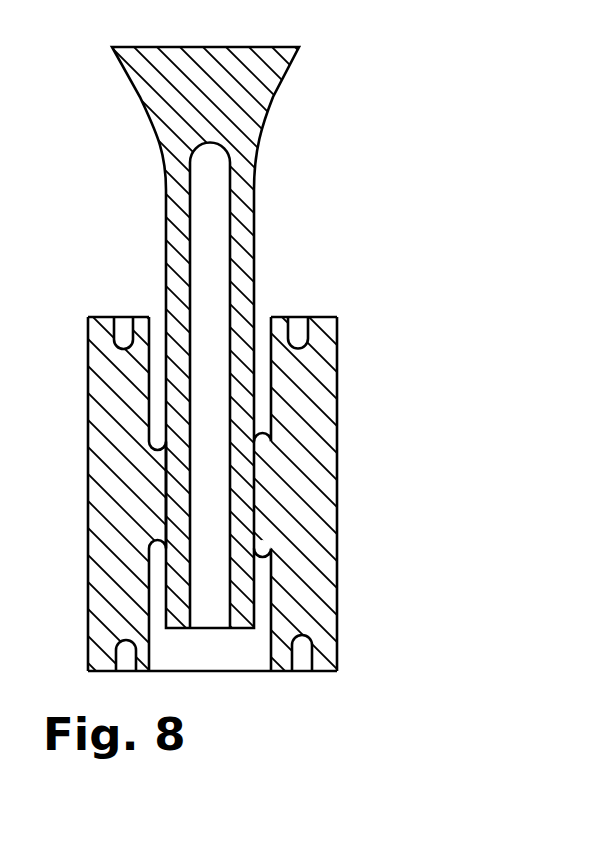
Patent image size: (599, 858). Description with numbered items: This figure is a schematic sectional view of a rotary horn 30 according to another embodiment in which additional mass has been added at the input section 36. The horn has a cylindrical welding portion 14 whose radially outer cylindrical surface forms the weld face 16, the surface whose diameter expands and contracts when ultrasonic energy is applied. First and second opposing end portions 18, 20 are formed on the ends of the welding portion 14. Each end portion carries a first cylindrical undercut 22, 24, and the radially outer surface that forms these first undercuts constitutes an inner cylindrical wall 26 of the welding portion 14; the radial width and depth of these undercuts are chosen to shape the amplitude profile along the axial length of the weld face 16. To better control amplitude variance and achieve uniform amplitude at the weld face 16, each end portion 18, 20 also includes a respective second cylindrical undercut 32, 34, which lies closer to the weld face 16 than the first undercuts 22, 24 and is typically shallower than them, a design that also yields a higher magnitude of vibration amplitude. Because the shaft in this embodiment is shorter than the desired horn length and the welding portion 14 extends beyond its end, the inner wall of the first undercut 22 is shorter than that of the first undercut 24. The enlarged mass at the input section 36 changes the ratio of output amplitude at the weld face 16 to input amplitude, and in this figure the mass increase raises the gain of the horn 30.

The welding portion 14 is at (248, 484).
The weld face 16 is at (337, 541).
The first end portion 18 is at (331, 672).
The second end portion 20 is at (316, 316).
The first cylindrical undercut 22 is at (272, 608).
The first cylindrical undercut 24 is at (263, 316).
The inner cylindrical wall 26 is at (272, 383).
The rotary horn 30 is at (253, 337).
The second cylindrical undercut 32 is at (302, 656).
The second cylindrical undercut 34 is at (298, 340).
The input section 36 is at (262, 101).